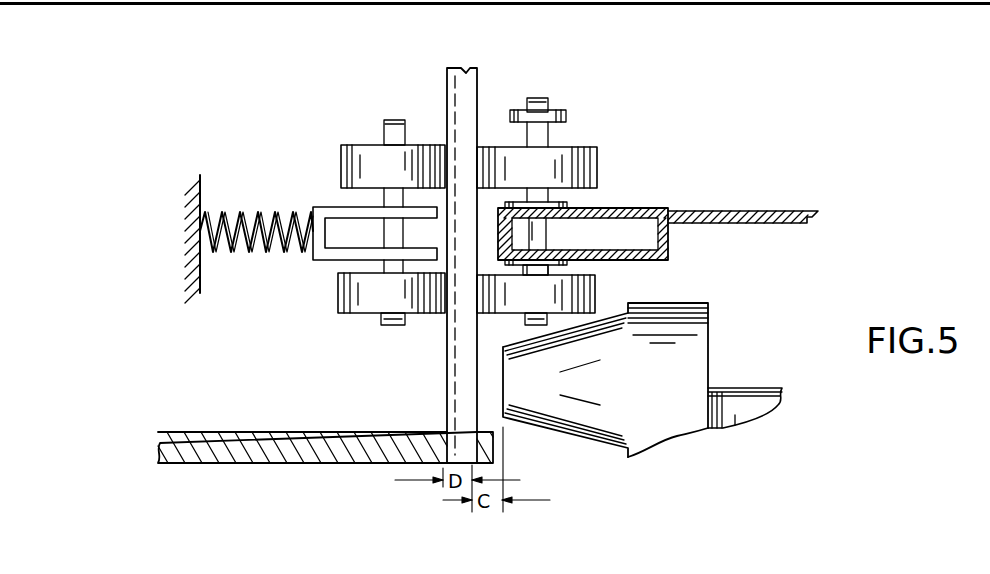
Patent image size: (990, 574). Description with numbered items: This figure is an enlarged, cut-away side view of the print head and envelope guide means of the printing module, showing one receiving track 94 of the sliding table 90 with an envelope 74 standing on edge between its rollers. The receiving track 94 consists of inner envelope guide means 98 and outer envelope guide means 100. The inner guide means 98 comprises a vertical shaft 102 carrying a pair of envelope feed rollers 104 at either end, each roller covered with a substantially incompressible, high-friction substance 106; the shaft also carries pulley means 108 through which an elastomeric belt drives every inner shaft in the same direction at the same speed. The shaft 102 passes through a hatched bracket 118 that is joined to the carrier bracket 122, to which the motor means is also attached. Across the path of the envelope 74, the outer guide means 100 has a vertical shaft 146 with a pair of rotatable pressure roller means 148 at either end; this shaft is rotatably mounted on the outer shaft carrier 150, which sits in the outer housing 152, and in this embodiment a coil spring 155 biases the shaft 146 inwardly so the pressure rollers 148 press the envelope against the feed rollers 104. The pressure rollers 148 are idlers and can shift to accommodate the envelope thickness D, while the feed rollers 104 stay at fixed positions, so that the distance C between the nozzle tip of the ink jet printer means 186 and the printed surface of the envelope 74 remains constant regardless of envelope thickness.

The envelope 74 is at (465, 83).
The sliding table 90 is at (253, 434).
The receiving track 94 is at (592, 185).
The inner envelope guide means 98 is at (611, 200).
The outer envelope guide means 100 is at (360, 202).
The vertical shaft 102 is at (538, 128).
The envelope feed roller 104 is at (587, 147).
The incompressible substance 106 is at (622, 230).
The pulley means 108 is at (568, 115).
The bracket 118 is at (655, 210).
The carrier bracket 122 is at (767, 210).
The vertical shaft 146 is at (391, 322).
The pressure roller means 148 is at (350, 145).
The outer shaft carrier 150 is at (316, 252).
The outer housing 152 is at (198, 266).
The coil spring 155 is at (264, 210).
The ink jet printer means 186 is at (682, 375).